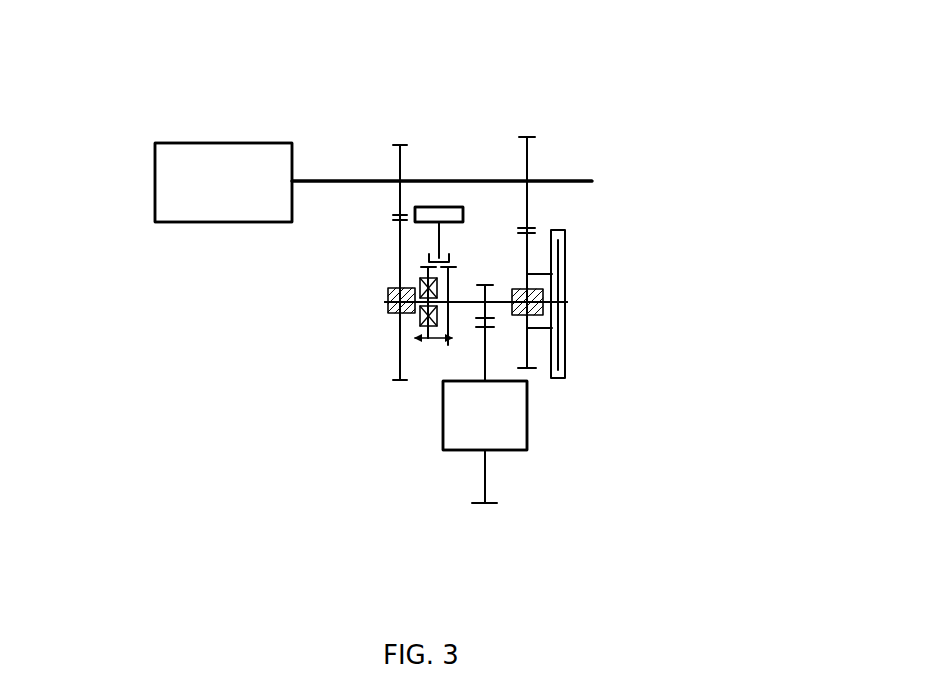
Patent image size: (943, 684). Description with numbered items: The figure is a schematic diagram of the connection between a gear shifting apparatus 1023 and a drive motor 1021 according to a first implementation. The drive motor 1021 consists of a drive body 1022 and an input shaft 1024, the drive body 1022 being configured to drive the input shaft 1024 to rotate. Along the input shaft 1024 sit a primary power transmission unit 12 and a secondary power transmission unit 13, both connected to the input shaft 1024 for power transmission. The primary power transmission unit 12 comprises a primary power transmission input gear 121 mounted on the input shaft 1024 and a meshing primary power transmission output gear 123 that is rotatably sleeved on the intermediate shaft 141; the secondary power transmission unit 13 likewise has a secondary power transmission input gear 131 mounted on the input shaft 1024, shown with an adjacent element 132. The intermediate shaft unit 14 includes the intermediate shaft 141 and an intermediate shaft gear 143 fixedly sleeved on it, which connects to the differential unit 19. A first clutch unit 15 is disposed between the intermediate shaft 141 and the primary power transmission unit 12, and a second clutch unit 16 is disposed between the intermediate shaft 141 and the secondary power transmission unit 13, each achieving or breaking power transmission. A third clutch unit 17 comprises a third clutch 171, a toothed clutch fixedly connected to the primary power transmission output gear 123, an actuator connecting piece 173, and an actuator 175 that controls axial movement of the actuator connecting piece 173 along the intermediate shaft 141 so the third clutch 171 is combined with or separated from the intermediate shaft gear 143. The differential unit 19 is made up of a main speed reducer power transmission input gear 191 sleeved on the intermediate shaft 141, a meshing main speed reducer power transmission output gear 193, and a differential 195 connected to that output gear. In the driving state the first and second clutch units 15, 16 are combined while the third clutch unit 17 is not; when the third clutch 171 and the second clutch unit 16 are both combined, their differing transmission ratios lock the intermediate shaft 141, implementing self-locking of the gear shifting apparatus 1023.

The drive motor 1021 is at (267, 68).
The drive body 1022 is at (155, 143).
The gear shifting apparatus 1023 is at (647, 368).
The input shaft 1024 is at (364, 174).
The primary power transmission unit 12 is at (66, 238).
The primary power transmission input gear 121 is at (400, 202).
The primary power transmission output gear 123 is at (400, 232).
The secondary power transmission unit 13 is at (593, 60).
The secondary power transmission input gear 131 is at (540, 127).
The gear collar 132 is at (536, 246).
The intermediate shaft unit 14 is at (256, 476).
The intermediate shaft 141 is at (467, 302).
The intermediate shaft gear 143 is at (425, 350).
The first clutch unit 15 is at (404, 320).
The second clutch unit 16 is at (566, 249).
The third clutch unit 17 is at (228, 288).
The third clutch 171 is at (427, 275).
The actuator connecting piece 173 is at (434, 245).
The actuator 175 is at (437, 221).
The differential unit 19 is at (415, 528).
The main speed reducer power transmission input gear 191 is at (470, 318).
The main speed reducer power transmission output gear 193 is at (490, 352).
The differential 195 is at (520, 457).